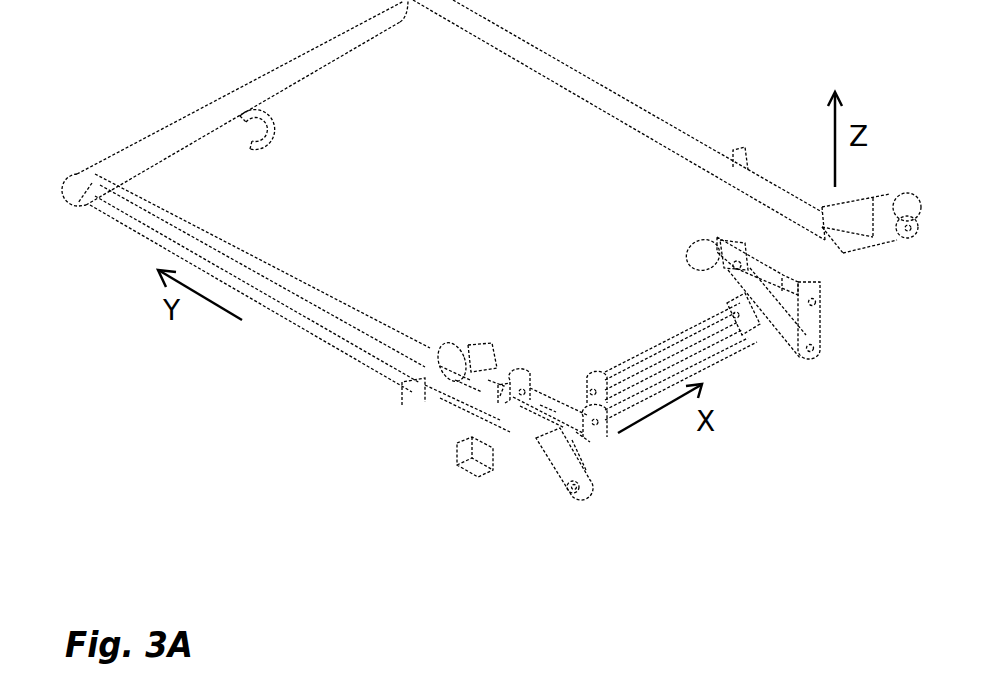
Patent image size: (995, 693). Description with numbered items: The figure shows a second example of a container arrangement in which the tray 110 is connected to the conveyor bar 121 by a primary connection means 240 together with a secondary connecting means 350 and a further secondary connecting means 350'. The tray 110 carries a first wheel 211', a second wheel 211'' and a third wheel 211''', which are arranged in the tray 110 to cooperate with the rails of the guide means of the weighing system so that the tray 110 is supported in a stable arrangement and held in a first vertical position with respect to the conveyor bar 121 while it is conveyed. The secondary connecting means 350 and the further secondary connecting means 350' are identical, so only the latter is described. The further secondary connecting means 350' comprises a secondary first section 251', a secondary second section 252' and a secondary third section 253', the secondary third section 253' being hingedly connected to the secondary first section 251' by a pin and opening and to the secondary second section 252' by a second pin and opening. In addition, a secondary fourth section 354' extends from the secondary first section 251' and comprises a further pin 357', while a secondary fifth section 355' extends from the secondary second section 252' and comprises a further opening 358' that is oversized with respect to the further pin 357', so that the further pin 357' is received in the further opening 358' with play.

The tray 110 is at (570, 152).
The conveyor bar 121 is at (842, 263).
The first wheel 211' is at (305, 135).
The second wheel 211'' is at (456, 351).
The third wheel 211''' is at (701, 228).
The primary connection means 240 is at (655, 330).
The secondary connecting means 350 is at (768, 222).
The further secondary connecting means 350' is at (532, 394).
The secondary first section 251' is at (366, 440).
The secondary second section 252' is at (465, 488).
The secondary third section 253' is at (424, 462).
The secondary fourth section 354' is at (523, 495).
The secondary fifth section 355' is at (650, 478).
The further pin 357' is at (625, 531).
The further opening 358' is at (704, 534).